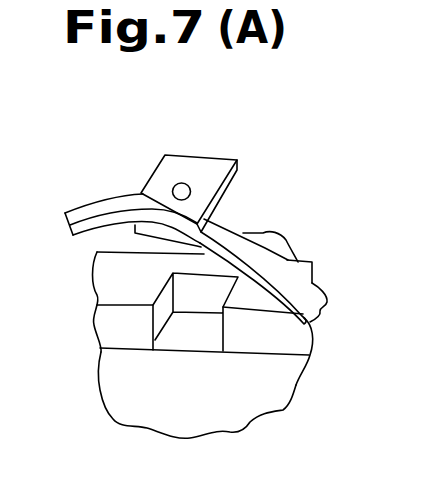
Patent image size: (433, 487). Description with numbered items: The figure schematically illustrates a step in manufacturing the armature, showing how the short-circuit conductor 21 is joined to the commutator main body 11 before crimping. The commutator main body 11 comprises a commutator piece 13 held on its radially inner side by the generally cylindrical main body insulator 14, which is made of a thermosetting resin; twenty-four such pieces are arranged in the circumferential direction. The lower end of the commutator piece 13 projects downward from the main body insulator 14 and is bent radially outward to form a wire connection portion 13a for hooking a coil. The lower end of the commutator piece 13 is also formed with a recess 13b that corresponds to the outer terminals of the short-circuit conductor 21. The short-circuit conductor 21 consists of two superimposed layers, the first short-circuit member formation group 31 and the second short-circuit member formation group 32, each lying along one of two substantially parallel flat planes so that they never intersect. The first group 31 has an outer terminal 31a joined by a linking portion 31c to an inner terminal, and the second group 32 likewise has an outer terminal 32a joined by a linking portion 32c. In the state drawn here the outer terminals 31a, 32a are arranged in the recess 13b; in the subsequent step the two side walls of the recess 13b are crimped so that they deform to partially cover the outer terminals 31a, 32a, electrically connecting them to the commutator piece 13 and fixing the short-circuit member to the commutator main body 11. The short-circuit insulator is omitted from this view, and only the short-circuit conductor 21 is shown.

The commutator main body 11 is at (313, 346).
The commutator piece 13 is at (96, 276).
The wire connection portion 13a is at (300, 226).
The recess 13b is at (176, 335).
The main body insulator 14 is at (100, 378).
The short-circuit conductor 21 is at (173, 155).
The first short-circuit member formation group 31 is at (78, 212).
The outer terminal 31a is at (219, 139).
The linking portion 31c is at (107, 200).
The second short-circuit member formation group 32 is at (318, 279).
The outer terminal 32a is at (237, 173).
The linking portion 32c is at (312, 262).